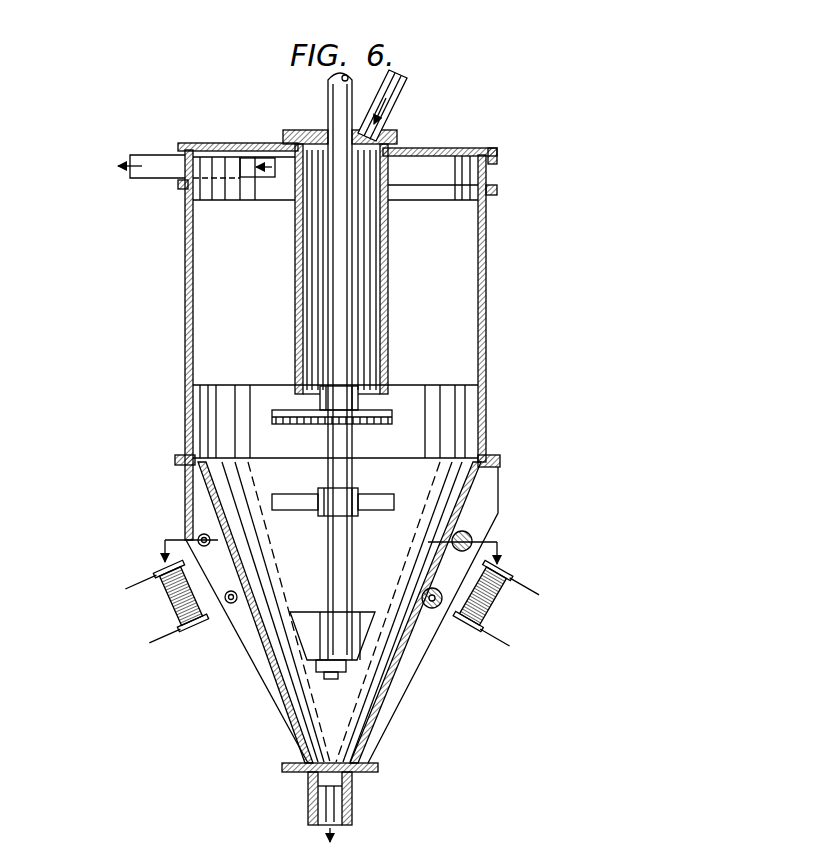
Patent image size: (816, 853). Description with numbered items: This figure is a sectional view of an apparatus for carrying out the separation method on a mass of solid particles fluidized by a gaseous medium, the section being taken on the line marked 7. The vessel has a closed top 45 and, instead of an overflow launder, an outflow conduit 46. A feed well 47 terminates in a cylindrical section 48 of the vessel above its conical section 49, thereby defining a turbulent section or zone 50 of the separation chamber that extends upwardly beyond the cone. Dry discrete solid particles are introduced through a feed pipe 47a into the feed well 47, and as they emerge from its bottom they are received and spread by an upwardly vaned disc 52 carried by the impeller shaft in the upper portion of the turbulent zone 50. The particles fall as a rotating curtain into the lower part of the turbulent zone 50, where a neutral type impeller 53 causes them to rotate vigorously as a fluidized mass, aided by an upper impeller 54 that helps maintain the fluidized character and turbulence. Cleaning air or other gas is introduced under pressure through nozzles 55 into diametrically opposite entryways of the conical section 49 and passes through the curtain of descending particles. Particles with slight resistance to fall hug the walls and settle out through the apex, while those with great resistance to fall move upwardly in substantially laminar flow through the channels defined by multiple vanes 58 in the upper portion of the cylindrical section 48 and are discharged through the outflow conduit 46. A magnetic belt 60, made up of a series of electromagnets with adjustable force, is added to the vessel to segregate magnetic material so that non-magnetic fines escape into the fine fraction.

The section line 7- 7 is at (330, 539).
The closed top 45 is at (268, 143).
The outflow conduit 46 is at (150, 167).
The feed well 47 is at (388, 266).
The feed pipe 47a is at (404, 103).
The cylindrical section 48 is at (486, 330).
The conical section 49 is at (388, 688).
The turbulent section or zone 50 is at (460, 430).
The upwardly vaned disc 52 is at (272, 416).
The neutral type impeller 53 is at (357, 616).
The upper impeller 54 is at (372, 502).
The nozzles 55 is at (208, 546).
The multiple vanes 58 is at (200, 270).
The magnetic belt 60 is at (170, 598).